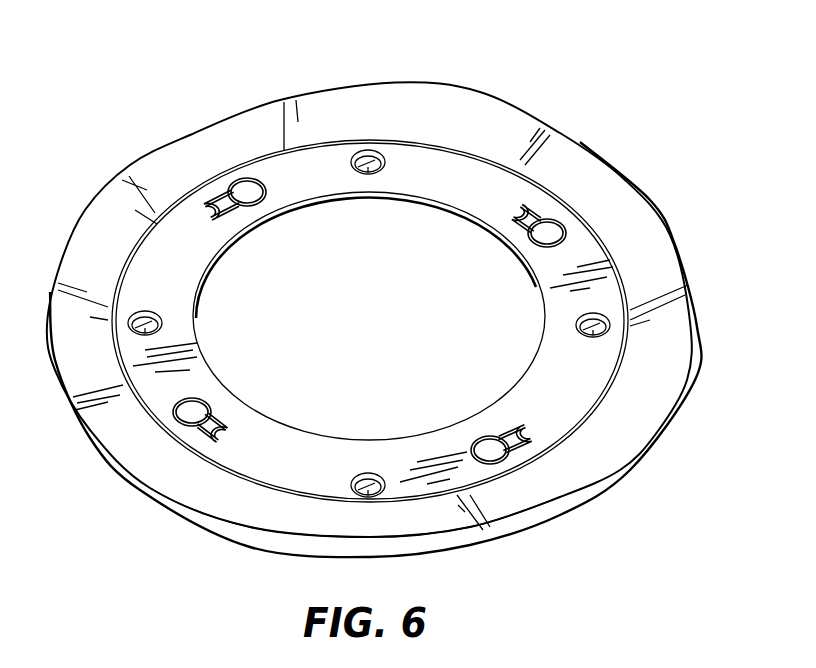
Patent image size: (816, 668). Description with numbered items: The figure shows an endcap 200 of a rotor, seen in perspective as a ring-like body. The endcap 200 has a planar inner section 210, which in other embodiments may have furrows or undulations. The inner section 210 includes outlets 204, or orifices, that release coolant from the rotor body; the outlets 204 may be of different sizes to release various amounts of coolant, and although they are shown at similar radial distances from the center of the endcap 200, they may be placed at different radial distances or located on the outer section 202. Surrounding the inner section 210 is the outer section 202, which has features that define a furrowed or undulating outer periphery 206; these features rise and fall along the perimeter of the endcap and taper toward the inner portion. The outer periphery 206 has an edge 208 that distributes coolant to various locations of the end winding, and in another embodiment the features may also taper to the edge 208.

The endcap 200 is at (208, 84).
The outer section 202 is at (521, 150).
The outlets 204 is at (254, 201).
The outer periphery 206 is at (288, 530).
The edge 208 is at (555, 504).
The inner section 210 is at (436, 177).